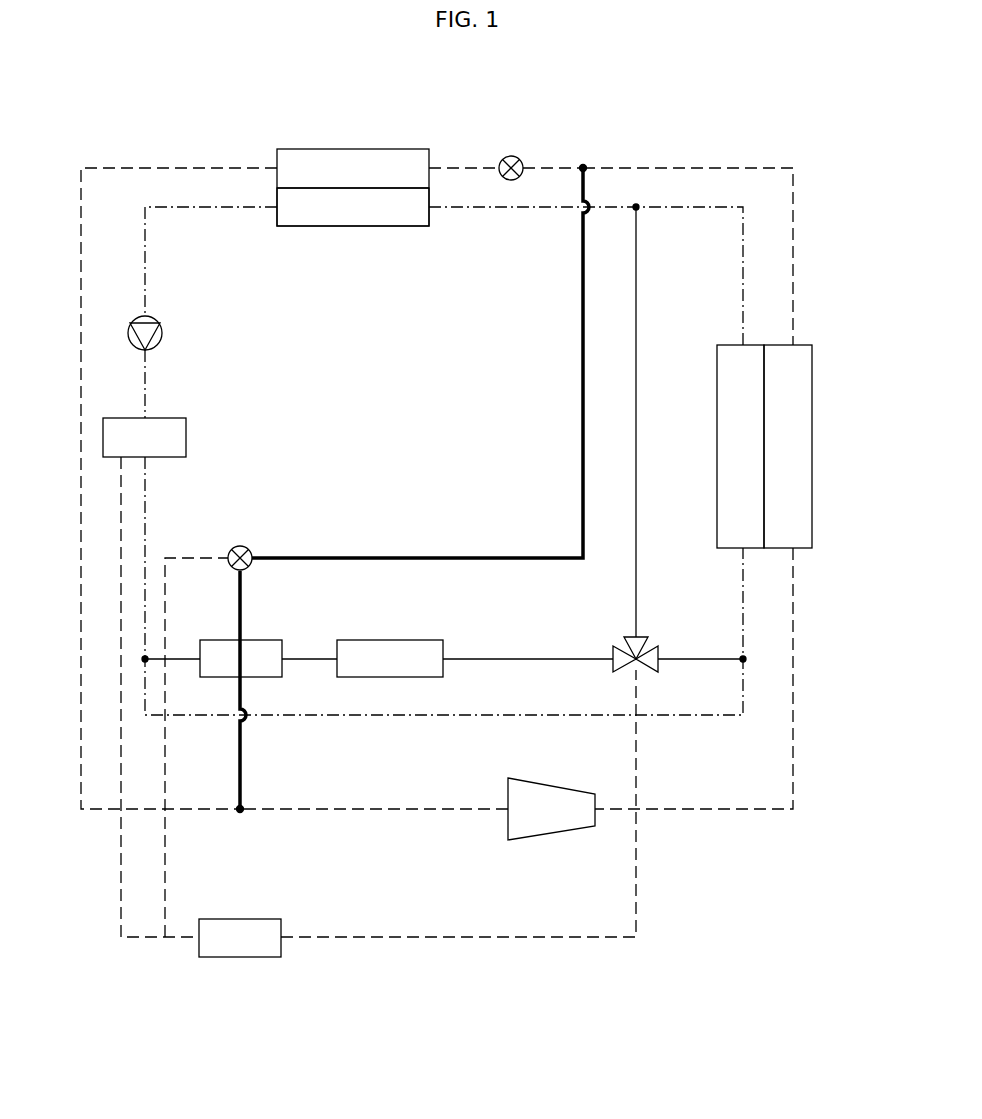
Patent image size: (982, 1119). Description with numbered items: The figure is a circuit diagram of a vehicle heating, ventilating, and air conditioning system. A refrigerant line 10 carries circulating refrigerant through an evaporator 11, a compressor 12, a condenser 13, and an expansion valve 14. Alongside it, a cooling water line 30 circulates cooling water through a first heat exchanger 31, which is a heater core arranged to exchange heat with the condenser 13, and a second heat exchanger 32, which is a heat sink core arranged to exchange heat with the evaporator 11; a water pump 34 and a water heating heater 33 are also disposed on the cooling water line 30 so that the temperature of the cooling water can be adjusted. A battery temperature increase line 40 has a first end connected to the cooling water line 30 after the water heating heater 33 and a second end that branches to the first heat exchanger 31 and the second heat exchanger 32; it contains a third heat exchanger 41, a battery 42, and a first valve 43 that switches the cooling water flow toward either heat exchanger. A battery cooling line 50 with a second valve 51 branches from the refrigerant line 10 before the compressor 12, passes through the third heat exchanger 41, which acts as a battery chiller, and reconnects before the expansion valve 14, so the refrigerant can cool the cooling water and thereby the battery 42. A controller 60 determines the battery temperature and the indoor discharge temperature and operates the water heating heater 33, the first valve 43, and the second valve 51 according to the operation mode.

The refrigerant line 10 is at (97, 809).
The evaporator 11 is at (333, 149).
The compressor 12 is at (547, 840).
The condenser 13 is at (805, 345).
The expansion valve 14 is at (511, 156).
The cooling water line 30 is at (400, 715).
The first heat exchanger 31 is at (725, 345).
The second heat exchanger 32 is at (323, 226).
The water heating heater 33 is at (186, 437).
The water pump 34 is at (162, 332).
The battery temperature increase line 40 is at (518, 658).
The third heat exchanger 41 is at (207, 640).
The battery 42 is at (383, 640).
The first valve 43 is at (648, 637).
The battery cooling line 50 is at (433, 557).
The second valve 51 is at (243, 546).
The controller 60 is at (240, 957).